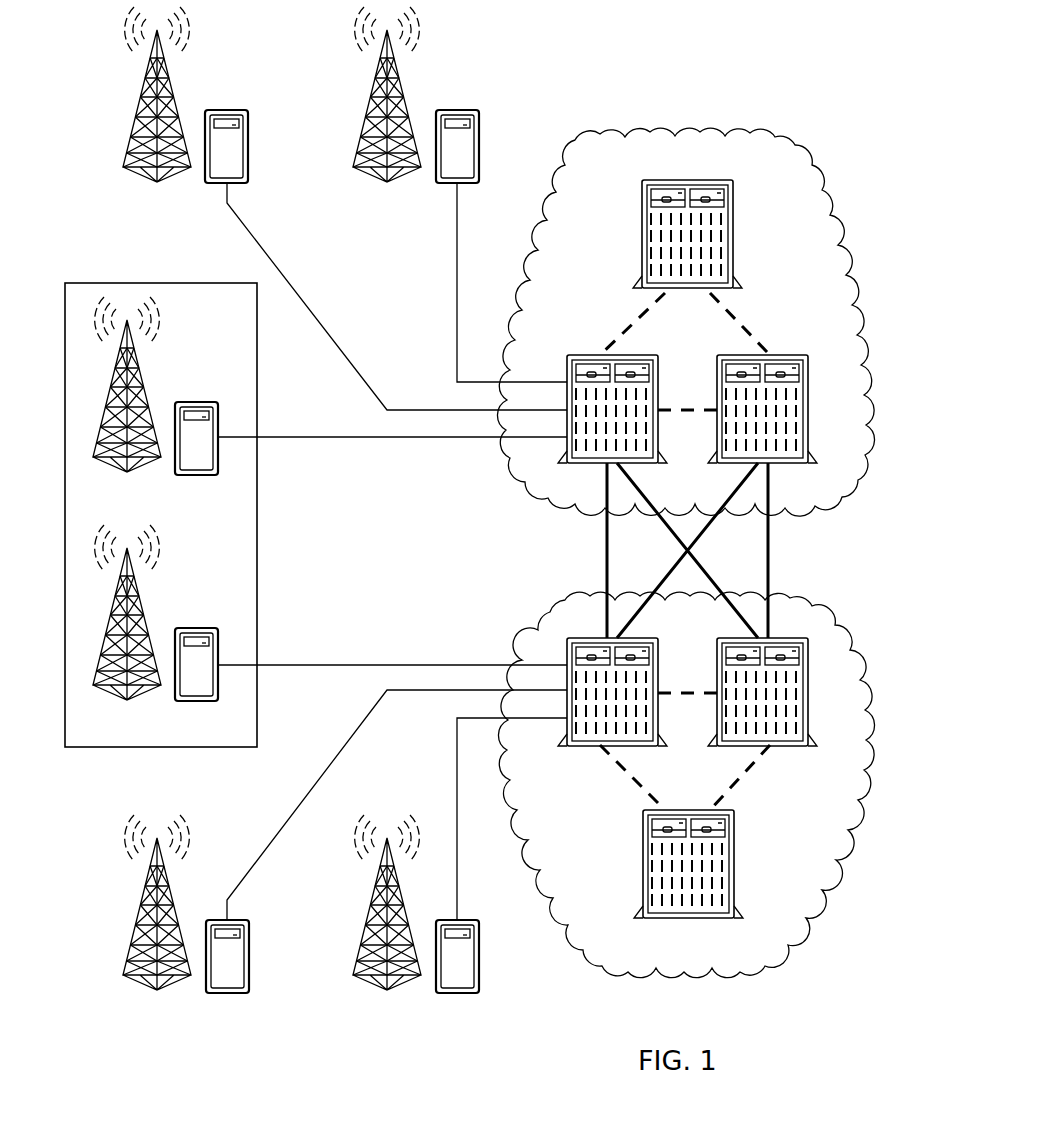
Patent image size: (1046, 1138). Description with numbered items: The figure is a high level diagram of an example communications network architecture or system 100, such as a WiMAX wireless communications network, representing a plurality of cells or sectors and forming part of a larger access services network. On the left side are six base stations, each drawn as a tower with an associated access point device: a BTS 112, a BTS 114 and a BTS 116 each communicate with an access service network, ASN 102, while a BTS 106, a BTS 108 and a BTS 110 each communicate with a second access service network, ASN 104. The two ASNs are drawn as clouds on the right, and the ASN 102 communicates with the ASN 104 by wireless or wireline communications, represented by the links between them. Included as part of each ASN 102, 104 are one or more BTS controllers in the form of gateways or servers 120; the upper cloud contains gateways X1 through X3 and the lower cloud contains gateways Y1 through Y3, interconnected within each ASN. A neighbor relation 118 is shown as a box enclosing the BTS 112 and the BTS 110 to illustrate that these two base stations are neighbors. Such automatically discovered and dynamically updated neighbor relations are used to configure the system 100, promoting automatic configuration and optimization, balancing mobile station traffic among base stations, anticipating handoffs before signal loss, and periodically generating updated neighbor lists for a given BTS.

The communications network system 100 is at (630, 50).
The access service network 102 is at (733, 133).
The access service network 104 is at (735, 972).
The base station 106 is at (481, 960).
The base station 108 is at (250, 960).
The base station 110 is at (198, 626).
The base station 112 is at (198, 400).
The base station 114 is at (250, 144).
The base station 116 is at (481, 144).
The neighbor relation 118 is at (125, 282).
The gateways or servers 120 is at (735, 236).